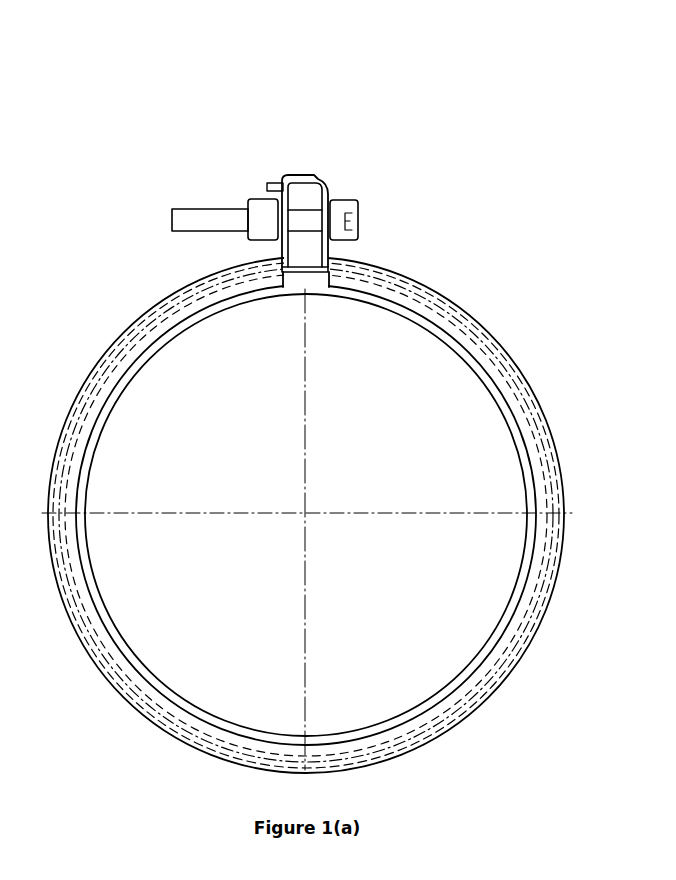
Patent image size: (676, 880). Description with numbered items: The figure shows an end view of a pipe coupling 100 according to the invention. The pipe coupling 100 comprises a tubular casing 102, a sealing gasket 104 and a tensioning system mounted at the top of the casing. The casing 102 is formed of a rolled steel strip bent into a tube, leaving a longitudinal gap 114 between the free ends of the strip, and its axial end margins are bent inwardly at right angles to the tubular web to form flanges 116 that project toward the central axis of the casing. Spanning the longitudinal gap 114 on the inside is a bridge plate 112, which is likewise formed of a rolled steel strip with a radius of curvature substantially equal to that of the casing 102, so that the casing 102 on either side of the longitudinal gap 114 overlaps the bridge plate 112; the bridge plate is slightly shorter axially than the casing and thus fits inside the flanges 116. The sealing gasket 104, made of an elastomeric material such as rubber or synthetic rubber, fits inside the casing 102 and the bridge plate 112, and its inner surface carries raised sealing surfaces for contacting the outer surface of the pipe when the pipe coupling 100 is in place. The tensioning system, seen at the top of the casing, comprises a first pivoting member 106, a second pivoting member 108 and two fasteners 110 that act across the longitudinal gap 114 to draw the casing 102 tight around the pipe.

The pipe coupling 100 is at (267, 122).
The tubular casing 102 is at (148, 313).
The sealing gasket 104 is at (432, 332).
The first pivoting member 106 is at (312, 176).
The second pivoting member 108 is at (310, 248).
The fastener 110 is at (222, 220).
The bridge plate 112 is at (393, 277).
The longitudinal gap 114 is at (358, 230).
The flange 116 is at (525, 415).